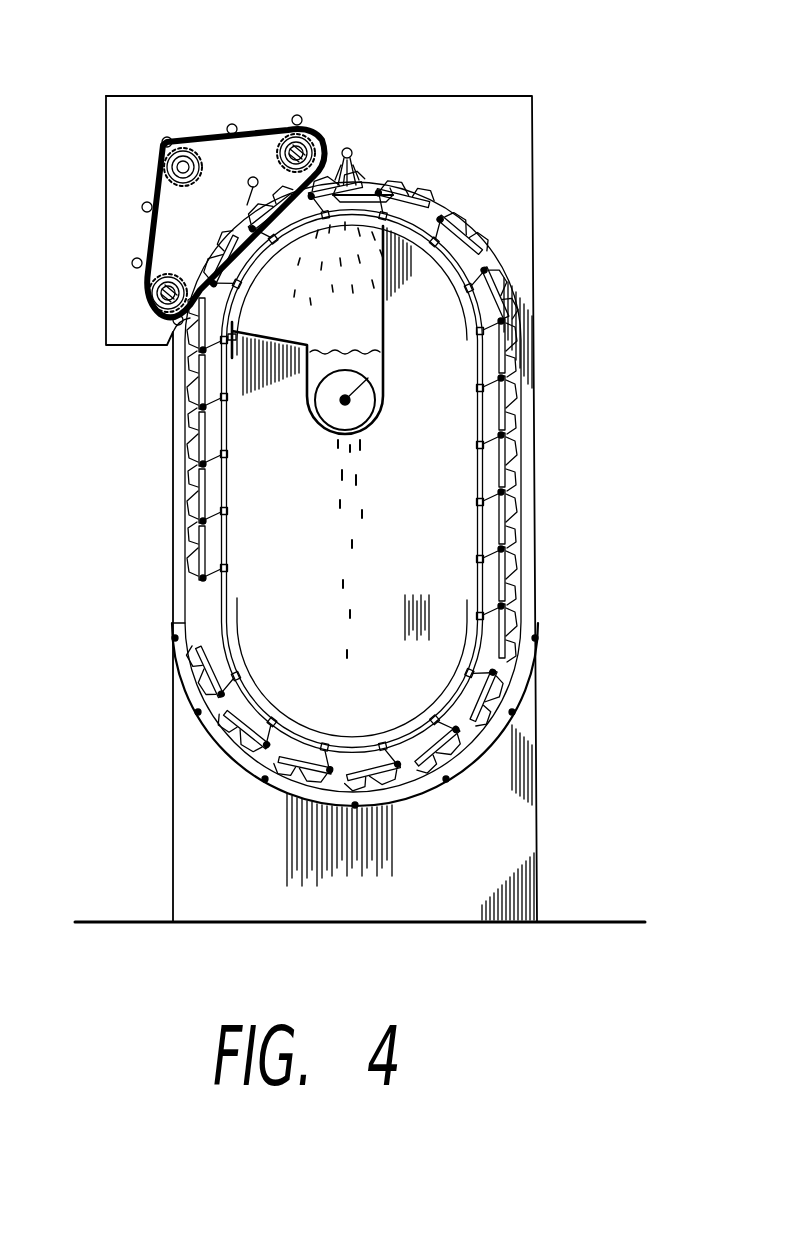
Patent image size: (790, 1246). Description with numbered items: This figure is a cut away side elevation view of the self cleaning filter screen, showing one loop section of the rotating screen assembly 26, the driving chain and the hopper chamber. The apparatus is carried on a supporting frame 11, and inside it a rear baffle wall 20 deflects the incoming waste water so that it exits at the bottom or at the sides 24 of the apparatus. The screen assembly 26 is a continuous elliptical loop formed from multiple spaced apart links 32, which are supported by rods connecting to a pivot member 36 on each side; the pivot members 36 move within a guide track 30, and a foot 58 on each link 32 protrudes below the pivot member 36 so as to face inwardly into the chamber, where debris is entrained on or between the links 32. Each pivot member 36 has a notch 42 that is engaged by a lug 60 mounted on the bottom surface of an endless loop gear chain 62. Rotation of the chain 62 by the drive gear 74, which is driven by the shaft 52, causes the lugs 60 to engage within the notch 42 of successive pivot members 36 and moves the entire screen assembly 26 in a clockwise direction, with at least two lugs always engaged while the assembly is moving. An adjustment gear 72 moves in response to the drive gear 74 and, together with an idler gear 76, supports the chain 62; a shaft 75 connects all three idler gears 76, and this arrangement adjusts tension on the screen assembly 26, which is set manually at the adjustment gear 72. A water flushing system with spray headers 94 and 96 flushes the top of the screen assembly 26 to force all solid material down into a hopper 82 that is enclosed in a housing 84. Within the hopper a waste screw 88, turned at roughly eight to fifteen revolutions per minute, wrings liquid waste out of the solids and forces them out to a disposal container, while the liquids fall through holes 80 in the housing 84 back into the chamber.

The supporting frame 11 is at (108, 349).
The rear baffle wall 20 is at (455, 840).
The sides 24 is at (541, 466).
The rotating screen assembly 26 is at (503, 353).
The guide track 30 is at (486, 290).
The links 32 is at (503, 527).
The pivot member 36 is at (517, 397).
The notch 42 is at (192, 323).
The shaft 52 is at (305, 140).
The foot 58 is at (483, 510).
The lug 60 is at (167, 137).
The endless loop gear chain 62 is at (152, 188).
The adjustment gear 72 is at (231, 125).
The drive gear 74 is at (265, 145).
The shaft 75 is at (148, 296).
The idler gear 76 is at (140, 264).
The holes 80 is at (333, 442).
The hopper 82 is at (343, 314).
The housing 84 is at (385, 366).
The waste screw 88 is at (362, 432).
The spray header 94 is at (250, 186).
The spray header 96 is at (353, 148).